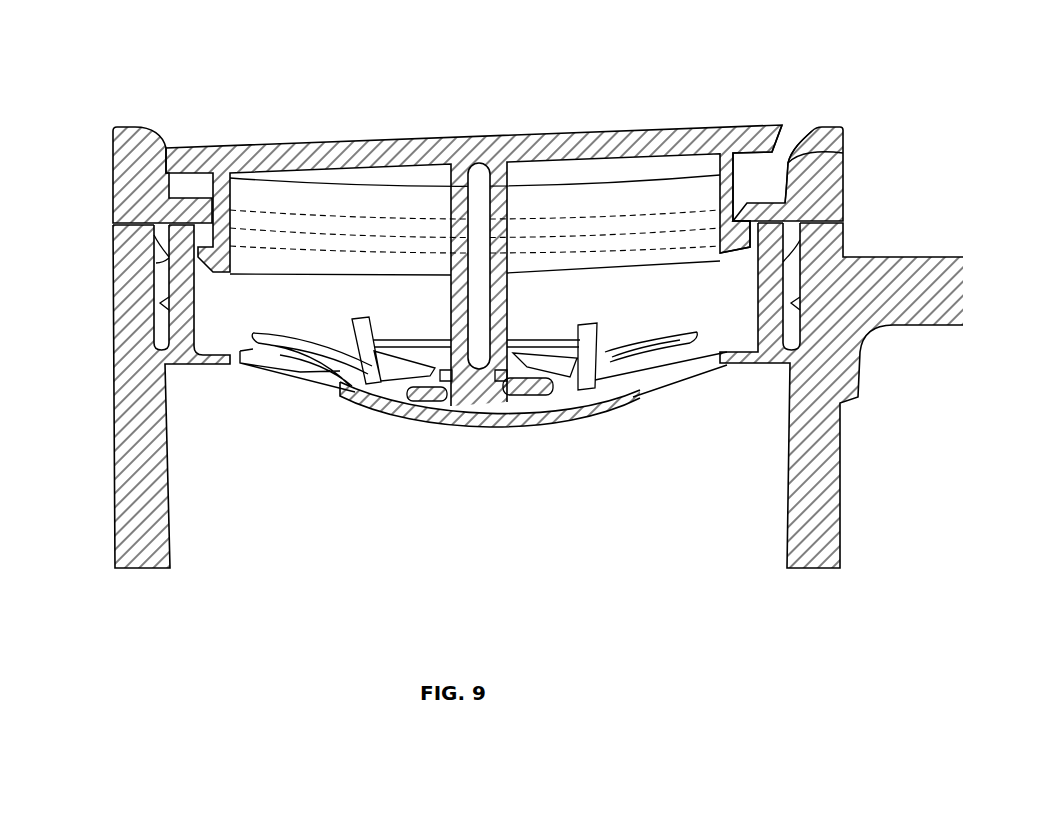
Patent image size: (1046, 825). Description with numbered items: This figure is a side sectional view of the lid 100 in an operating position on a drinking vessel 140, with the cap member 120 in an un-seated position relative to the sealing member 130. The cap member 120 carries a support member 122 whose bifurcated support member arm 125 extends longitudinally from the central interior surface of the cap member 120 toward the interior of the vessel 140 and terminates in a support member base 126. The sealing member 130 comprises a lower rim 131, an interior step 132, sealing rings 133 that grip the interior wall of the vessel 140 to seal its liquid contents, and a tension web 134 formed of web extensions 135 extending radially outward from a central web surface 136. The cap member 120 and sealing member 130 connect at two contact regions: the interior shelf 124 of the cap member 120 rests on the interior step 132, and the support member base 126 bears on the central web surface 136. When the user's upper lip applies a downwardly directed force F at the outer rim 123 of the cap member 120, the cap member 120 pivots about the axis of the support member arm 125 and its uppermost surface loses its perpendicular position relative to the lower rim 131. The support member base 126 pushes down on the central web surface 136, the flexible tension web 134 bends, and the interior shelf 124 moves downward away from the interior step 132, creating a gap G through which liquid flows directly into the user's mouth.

The lid 100 is at (104, 107).
The cap member 120 is at (440, 133).
The support member 122 is at (507, 300).
The outer rim 123 is at (780, 126).
The interior shelf 124 is at (750, 247).
The support member arm 125 is at (458, 325).
The support member base 126 is at (403, 413).
The sealing member 130 is at (798, 124).
The lower rim 131 is at (843, 188).
The interior step 132 is at (843, 153).
The sealing rings 133 is at (156, 262).
The tension web 134 is at (292, 378).
The web extensions 135 is at (673, 383).
The central web surface 136 is at (486, 432).
The drinking vessel 140 is at (818, 472).
The force F is at (185, 115).
The gap G is at (207, 237).